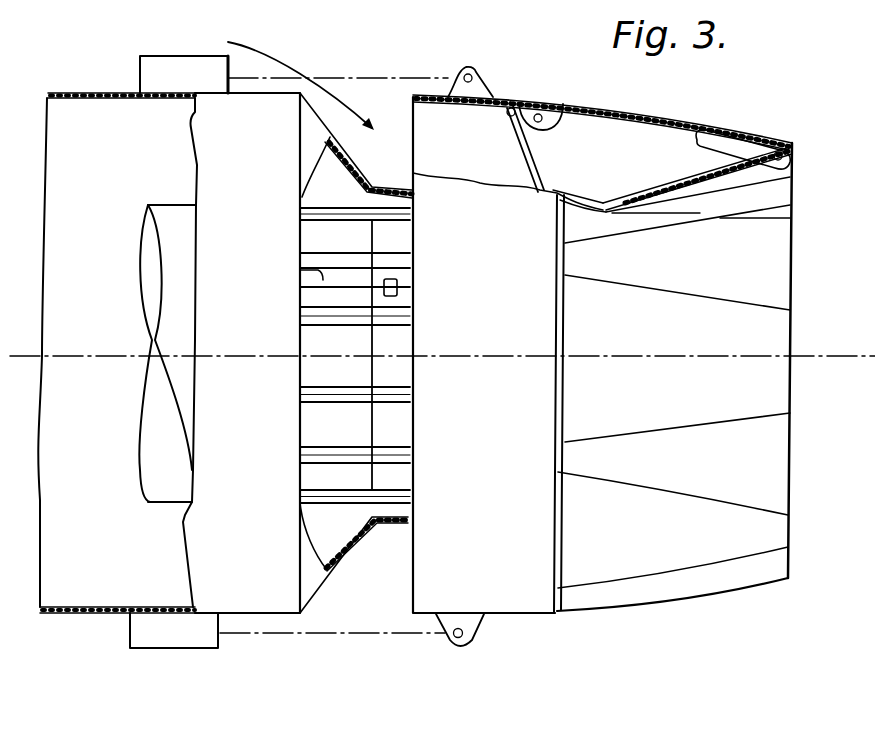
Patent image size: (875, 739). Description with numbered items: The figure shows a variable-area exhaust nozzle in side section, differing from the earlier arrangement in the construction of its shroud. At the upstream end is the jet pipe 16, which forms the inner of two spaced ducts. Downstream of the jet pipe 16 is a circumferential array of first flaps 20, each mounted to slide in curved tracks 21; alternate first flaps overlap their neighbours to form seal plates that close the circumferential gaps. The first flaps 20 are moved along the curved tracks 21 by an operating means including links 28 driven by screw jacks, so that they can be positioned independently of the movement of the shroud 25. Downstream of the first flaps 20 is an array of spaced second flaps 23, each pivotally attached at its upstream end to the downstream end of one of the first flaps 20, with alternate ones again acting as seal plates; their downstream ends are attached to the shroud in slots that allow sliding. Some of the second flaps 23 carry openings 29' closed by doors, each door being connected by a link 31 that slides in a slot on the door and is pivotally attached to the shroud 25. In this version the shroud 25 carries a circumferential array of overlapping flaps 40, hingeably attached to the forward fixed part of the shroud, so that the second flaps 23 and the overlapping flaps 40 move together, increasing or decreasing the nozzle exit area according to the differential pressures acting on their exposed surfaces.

The jet pipe 16 is at (152, 430).
The first flaps 20 is at (400, 277).
The curved tracks 21 is at (306, 212).
The second flaps 23 is at (687, 176).
The shroud 25 is at (498, 90).
The links 28 is at (300, 270).
The openings 29' is at (579, 179).
The link 31 is at (517, 152).
The overlapping flaps 40 is at (676, 118).